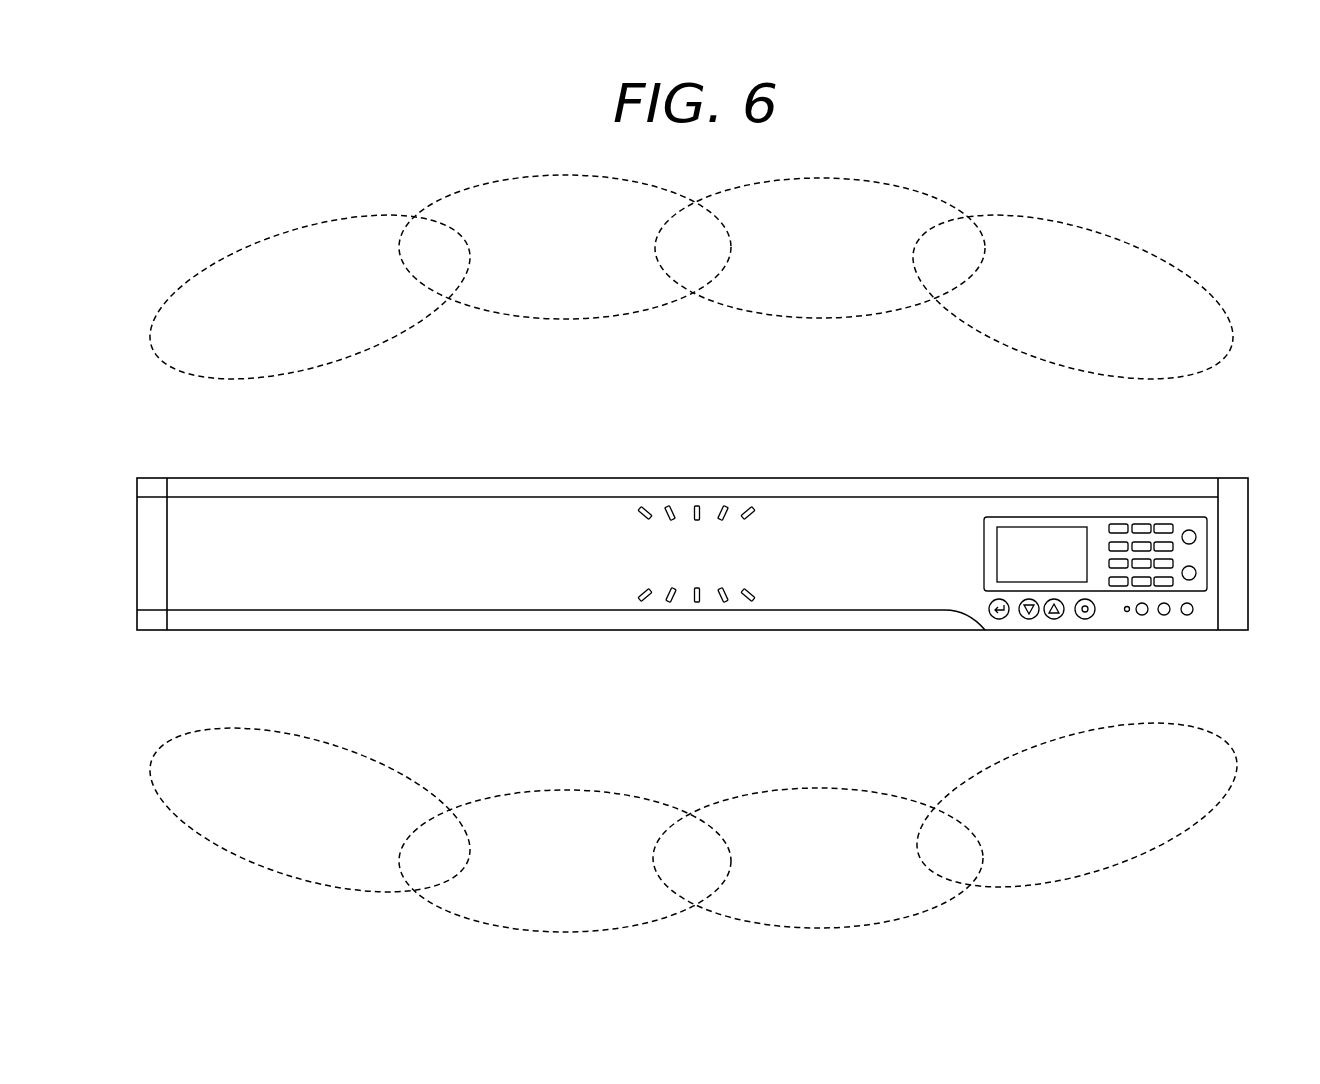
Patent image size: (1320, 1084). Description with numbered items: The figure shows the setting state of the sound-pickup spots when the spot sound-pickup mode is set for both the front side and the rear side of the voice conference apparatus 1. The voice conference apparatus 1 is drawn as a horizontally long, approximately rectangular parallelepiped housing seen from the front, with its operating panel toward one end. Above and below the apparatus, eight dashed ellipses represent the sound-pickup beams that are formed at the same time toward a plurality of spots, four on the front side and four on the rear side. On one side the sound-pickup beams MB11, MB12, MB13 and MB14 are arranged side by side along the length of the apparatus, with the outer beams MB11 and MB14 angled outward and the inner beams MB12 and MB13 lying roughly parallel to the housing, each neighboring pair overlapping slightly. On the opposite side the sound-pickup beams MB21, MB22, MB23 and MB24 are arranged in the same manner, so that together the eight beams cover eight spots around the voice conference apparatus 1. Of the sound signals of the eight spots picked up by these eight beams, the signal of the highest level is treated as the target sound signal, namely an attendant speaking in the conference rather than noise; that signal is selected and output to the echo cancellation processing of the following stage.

The voice conference apparatus 1 is at (1213, 469).
The sound-pickup beam MB11 is at (310, 809).
The sound-pickup beam MB12 is at (565, 861).
The sound-pickup beam MB13 is at (818, 858).
The sound-pickup beam MB14 is at (1077, 804).
The sound-pickup beam MB21 is at (310, 296).
The sound-pickup beam MB22 is at (565, 247).
The sound-pickup beam MB23 is at (820, 248).
The sound-pickup beam MB24 is at (1073, 296).